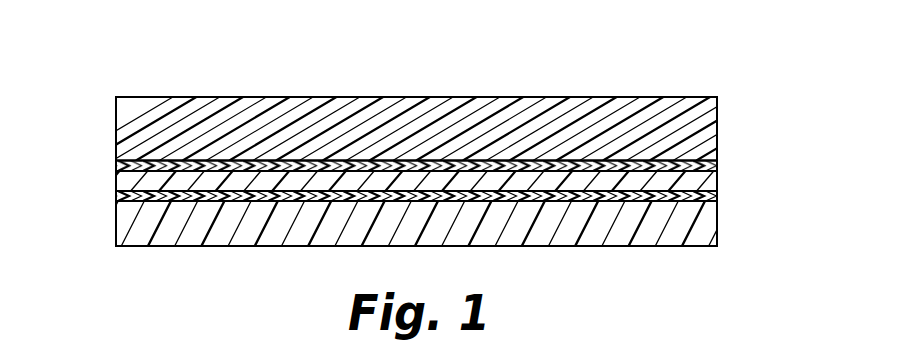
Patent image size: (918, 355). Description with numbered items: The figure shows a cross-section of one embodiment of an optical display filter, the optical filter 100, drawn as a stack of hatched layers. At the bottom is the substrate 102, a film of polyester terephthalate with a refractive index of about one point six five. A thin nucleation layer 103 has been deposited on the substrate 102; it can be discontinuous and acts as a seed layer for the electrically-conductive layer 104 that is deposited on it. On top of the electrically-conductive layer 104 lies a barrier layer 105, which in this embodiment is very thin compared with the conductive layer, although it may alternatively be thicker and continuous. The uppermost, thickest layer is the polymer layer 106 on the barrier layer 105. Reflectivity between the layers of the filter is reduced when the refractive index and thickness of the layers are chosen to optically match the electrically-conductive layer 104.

The optical filter 100 is at (683, 58).
The substrate 102 is at (192, 236).
The nucleation layer 103 is at (125, 196).
The electrically-conductive layer 104 is at (125, 181).
The barrier layer 105 is at (124, 166).
The polymer layer 106 is at (158, 110).